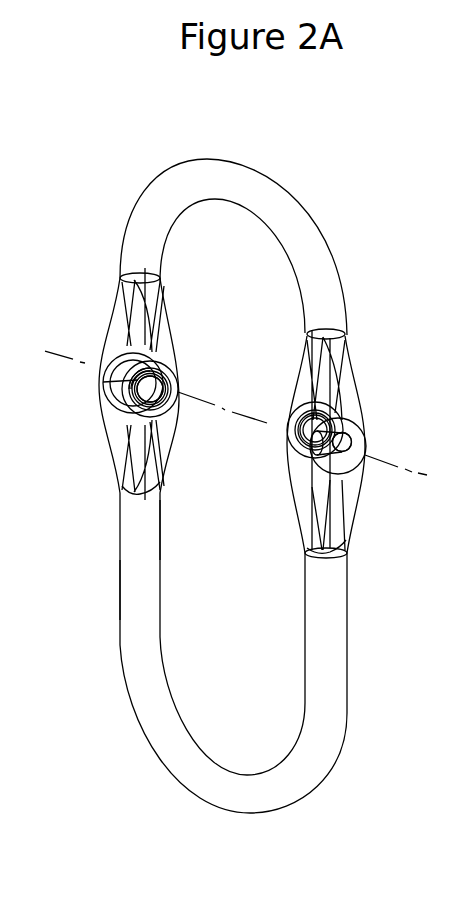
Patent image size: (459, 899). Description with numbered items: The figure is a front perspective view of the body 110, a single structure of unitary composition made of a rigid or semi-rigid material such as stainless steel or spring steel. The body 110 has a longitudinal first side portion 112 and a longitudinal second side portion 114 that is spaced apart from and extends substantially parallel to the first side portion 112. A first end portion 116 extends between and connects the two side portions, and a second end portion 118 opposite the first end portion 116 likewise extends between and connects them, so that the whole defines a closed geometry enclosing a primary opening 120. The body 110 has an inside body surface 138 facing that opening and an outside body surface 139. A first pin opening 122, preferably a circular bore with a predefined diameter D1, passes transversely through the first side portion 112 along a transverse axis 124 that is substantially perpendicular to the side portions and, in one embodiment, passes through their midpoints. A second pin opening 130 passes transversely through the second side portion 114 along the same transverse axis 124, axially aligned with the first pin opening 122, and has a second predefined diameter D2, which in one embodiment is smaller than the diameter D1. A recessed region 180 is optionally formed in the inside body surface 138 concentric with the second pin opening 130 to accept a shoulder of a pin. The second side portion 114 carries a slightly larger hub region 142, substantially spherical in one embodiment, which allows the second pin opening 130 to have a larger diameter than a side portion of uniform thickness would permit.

The body 110 is at (458, 190).
The first side portion 112 is at (122, 532).
The second side portion 114 is at (333, 670).
The first end portion 116 is at (158, 205).
The second end portion 118 is at (232, 800).
The primary opening 120 is at (264, 638).
The first pin opening 122 is at (155, 390).
The transverse axis 124 is at (58, 357).
The second pin opening 130 is at (346, 443).
The inside body surface 138 is at (156, 534).
The outside body surface 139 is at (114, 588).
The hub region 142 is at (347, 387).
The recessed region 180 is at (293, 453).
The diameter of first pin opening D1 is at (172, 408).
The diameter of second pin opening D2 is at (350, 461).